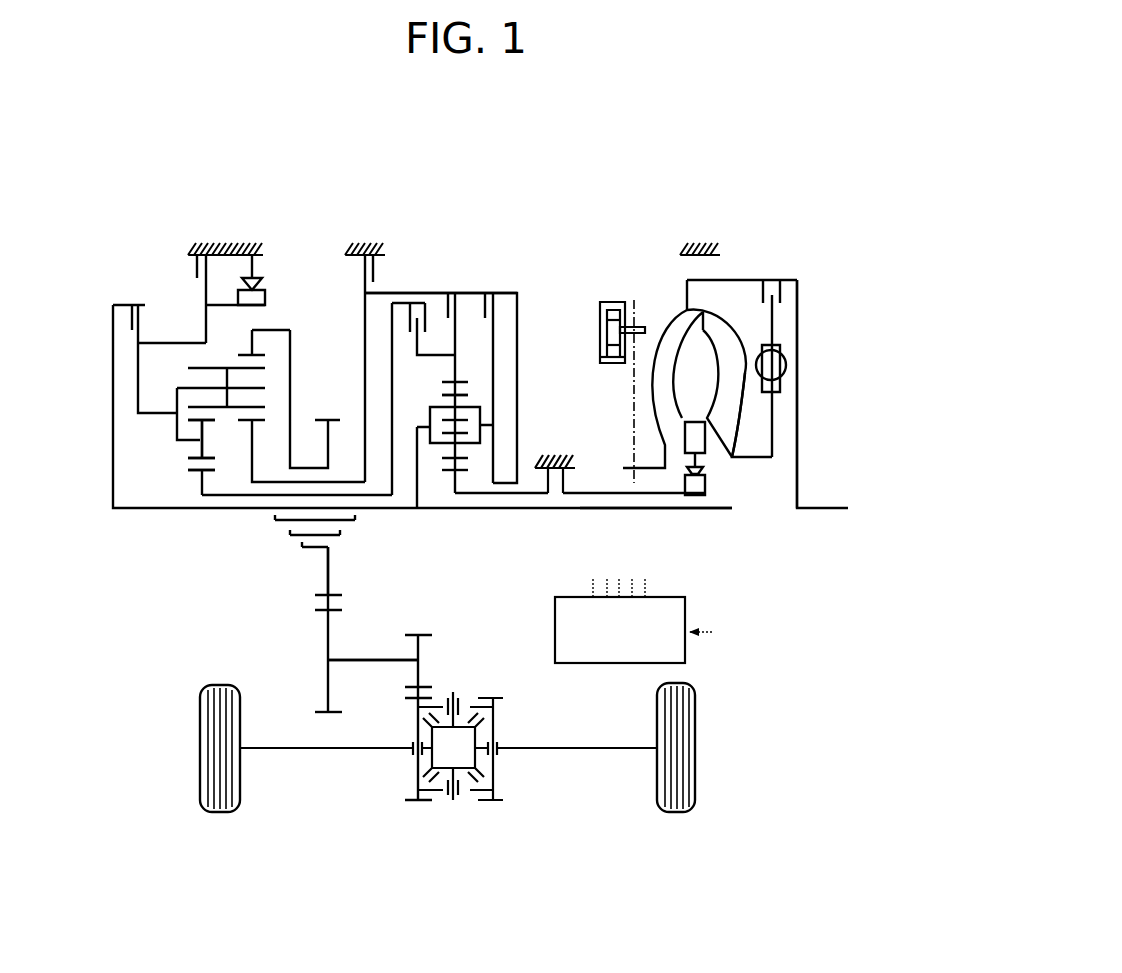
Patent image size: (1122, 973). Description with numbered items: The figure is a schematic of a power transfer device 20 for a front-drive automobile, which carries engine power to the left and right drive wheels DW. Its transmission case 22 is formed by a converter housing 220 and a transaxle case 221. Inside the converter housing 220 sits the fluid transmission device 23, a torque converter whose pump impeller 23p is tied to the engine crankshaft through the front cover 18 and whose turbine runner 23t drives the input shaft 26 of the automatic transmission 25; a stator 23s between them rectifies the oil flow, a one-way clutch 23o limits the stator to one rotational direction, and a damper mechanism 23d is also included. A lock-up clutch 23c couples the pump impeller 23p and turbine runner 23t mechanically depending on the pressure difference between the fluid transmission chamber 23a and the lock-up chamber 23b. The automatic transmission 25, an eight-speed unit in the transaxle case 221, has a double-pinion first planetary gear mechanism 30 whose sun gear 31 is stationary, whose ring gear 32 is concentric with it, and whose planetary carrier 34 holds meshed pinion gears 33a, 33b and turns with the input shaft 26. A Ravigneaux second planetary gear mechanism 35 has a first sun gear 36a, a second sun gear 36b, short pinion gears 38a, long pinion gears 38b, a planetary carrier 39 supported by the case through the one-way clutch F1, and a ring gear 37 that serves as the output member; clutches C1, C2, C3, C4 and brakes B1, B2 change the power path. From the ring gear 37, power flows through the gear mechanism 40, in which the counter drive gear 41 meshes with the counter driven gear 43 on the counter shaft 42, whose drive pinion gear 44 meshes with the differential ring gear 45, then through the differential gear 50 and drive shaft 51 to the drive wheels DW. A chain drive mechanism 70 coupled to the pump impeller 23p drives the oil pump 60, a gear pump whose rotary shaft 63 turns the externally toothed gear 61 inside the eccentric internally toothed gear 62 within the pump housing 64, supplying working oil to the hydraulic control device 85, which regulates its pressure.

The power transfer device 20 is at (498, 206).
The transmission case 22 is at (221, 244).
The second brake B2 is at (196, 272).
The one-way clutch F1 is at (265, 297).
The second clutch C2 is at (133, 318).
The long pinion gear 38b is at (198, 365).
The ring gear 37 is at (265, 352).
The automatic transmission 25 is at (336, 278).
The planetary carrier 39 is at (177, 397).
The short pinion gear 38a is at (200, 447).
The first sun gear 36a is at (195, 473).
The second sun gear 36b is at (248, 424).
The second planetary gear mechanism 35 is at (170, 455).
The transaxle case 221 is at (355, 243).
The first brake B1 is at (376, 273).
The first clutch C1 is at (424, 320).
The third clutch C3 is at (463, 310).
The fourth clutch C4 is at (498, 312).
The first planetary gear mechanism 30 is at (438, 387).
The ring gear 32 is at (470, 396).
The planetary carrier 34 is at (430, 413).
The pinion gear 33b is at (495, 411).
The pinion gear 33a is at (465, 436).
The sun gear 31 is at (447, 472).
The chain drive mechanism 70 is at (628, 446).
The oil pump 60 is at (612, 296).
The pump housing 64 is at (600, 318).
The externally toothed gear 61 is at (600, 336).
The internally toothed gear 62 is at (614, 361).
The rotary shaft 63 is at (633, 325).
The converter housing 220 is at (688, 243).
The fluid transmission device 23 is at (676, 306).
The pump impeller 23p is at (680, 320).
The fluid transmission chamber 23a is at (714, 310).
The stator 23s is at (695, 422).
The one-way clutch 23o is at (716, 487).
The lock-up clutch 23c is at (786, 298).
The lock-up chamber 23b is at (784, 408).
The damper mechanism 23d is at (788, 345).
The front cover 18 is at (798, 369).
The turbine runner 23t is at (731, 404).
The input shaft 26 is at (705, 508).
The gear mechanism 40 is at (310, 626).
The counter drive gear 41 is at (315, 596).
The counter shaft 42 is at (355, 660).
The counter driven gear 43 is at (327, 681).
The drive pinion gear 44 is at (425, 635).
The differential ring gear 45 is at (418, 800).
The differential gear 50 is at (499, 718).
The drive shaft 51 is at (395, 748).
The drive wheel DW is at (200, 752).
The hydraulic control device 85 is at (622, 665).